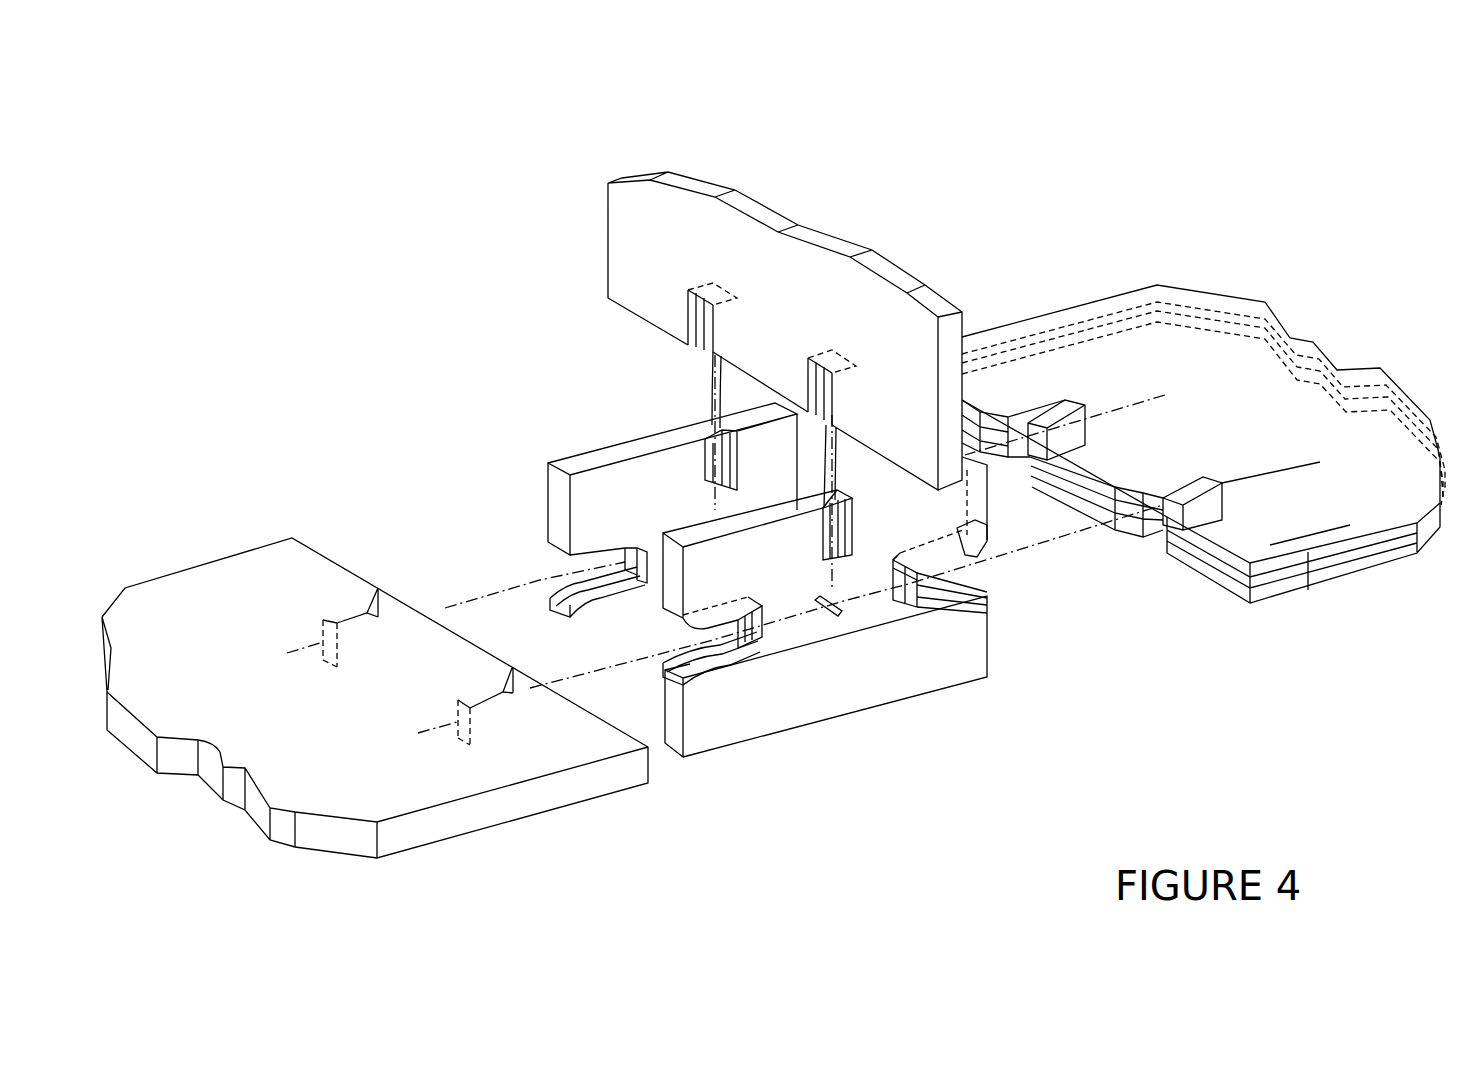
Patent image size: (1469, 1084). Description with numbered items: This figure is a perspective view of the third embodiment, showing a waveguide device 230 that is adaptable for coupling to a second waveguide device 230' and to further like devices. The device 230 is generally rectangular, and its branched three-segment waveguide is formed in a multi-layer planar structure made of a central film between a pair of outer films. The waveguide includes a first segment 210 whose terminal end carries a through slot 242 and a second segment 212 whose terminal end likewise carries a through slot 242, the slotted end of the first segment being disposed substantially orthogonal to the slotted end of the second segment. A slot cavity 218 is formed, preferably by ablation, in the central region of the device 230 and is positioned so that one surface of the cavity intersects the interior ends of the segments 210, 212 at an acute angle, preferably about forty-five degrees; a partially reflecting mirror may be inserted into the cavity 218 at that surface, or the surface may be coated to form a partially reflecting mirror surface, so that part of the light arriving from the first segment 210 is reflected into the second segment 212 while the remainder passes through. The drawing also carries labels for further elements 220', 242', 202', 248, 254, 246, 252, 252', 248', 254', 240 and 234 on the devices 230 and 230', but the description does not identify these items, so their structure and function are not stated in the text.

The insert body / plate 220' is at (785, 316).
The second waveguide device 230' is at (1203, 401).
The waveguide device 230 is at (739, 594).
The through slot 242 is at (831, 493).
The tongue 242' is at (804, 596).
The axis of alignment 202' is at (1173, 423).
The hidden edge of connector 248 is at (823, 570).
The tongue 254 is at (844, 618).
The curved rail 246 is at (718, 658).
The post 252 is at (942, 507).
The first waveguide segment 210 is at (873, 596).
The second waveguide segment 212 is at (898, 586).
The slot cavity 218 is at (828, 617).
The ledge 252' is at (1069, 448).
The tab block 248' is at (1134, 465).
The rail 254' is at (1160, 495).
The edge 240 is at (1222, 503).
The top surface 234 is at (1282, 537).